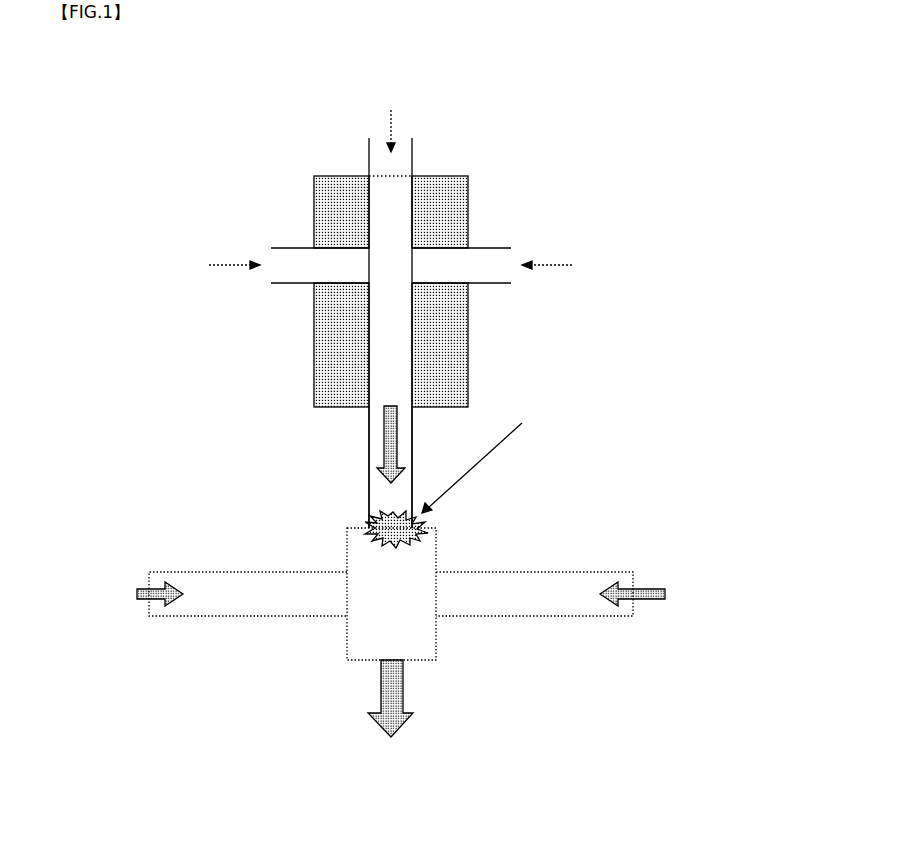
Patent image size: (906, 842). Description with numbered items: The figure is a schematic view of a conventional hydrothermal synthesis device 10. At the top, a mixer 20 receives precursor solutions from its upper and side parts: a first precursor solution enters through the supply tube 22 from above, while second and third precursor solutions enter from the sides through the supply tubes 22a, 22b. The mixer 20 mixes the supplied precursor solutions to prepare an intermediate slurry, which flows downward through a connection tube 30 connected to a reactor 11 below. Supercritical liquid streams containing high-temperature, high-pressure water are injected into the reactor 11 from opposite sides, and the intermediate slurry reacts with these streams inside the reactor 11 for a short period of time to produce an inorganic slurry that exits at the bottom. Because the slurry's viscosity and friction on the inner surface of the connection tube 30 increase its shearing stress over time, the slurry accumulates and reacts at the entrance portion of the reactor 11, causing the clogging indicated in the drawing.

The hydrothermal synthesis device 10 is at (108, 134).
The supply tube 22 is at (369, 152).
The supply tube 22a is at (290, 248).
The supply tube 22b is at (488, 248).
The mixer 20 is at (314, 380).
The connection tube 30 is at (369, 470).
The reactor 11 is at (347, 545).